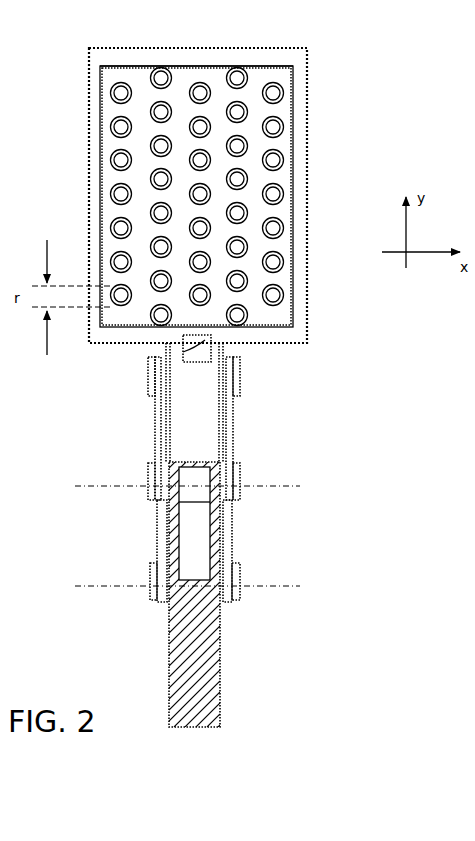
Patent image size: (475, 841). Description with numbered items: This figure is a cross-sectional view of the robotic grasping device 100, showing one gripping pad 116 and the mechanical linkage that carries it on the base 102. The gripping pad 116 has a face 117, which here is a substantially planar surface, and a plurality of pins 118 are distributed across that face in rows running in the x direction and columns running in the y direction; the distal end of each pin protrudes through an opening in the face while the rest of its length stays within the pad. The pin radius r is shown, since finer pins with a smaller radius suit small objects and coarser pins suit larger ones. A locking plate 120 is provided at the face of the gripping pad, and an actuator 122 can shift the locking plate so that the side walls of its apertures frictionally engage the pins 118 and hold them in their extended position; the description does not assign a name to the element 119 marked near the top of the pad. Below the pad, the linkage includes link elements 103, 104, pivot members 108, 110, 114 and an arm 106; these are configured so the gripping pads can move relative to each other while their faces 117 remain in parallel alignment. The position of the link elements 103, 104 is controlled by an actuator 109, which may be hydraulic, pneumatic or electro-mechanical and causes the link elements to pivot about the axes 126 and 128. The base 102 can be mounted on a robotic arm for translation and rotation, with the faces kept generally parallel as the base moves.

The grasping device 100 is at (367, 111).
The base 102 is at (169, 660).
The link element 103 is at (157, 545).
The link element 104 is at (155, 431).
The arm 106 is at (210, 424).
The pivot member 108 is at (152, 598).
The actuator 109 is at (210, 540).
The pivot member 110 is at (148, 475).
The pivot member 114 is at (148, 388).
The gripping pad 116 is at (89, 200).
The face 117 is at (297, 212).
The pins 118 is at (110, 128).
The faceplate surface 119 is at (217, 72).
The locking plate 120 is at (109, 160).
The actuator 122 is at (183, 347).
The axis 126 is at (103, 585).
The axis 128 is at (300, 488).